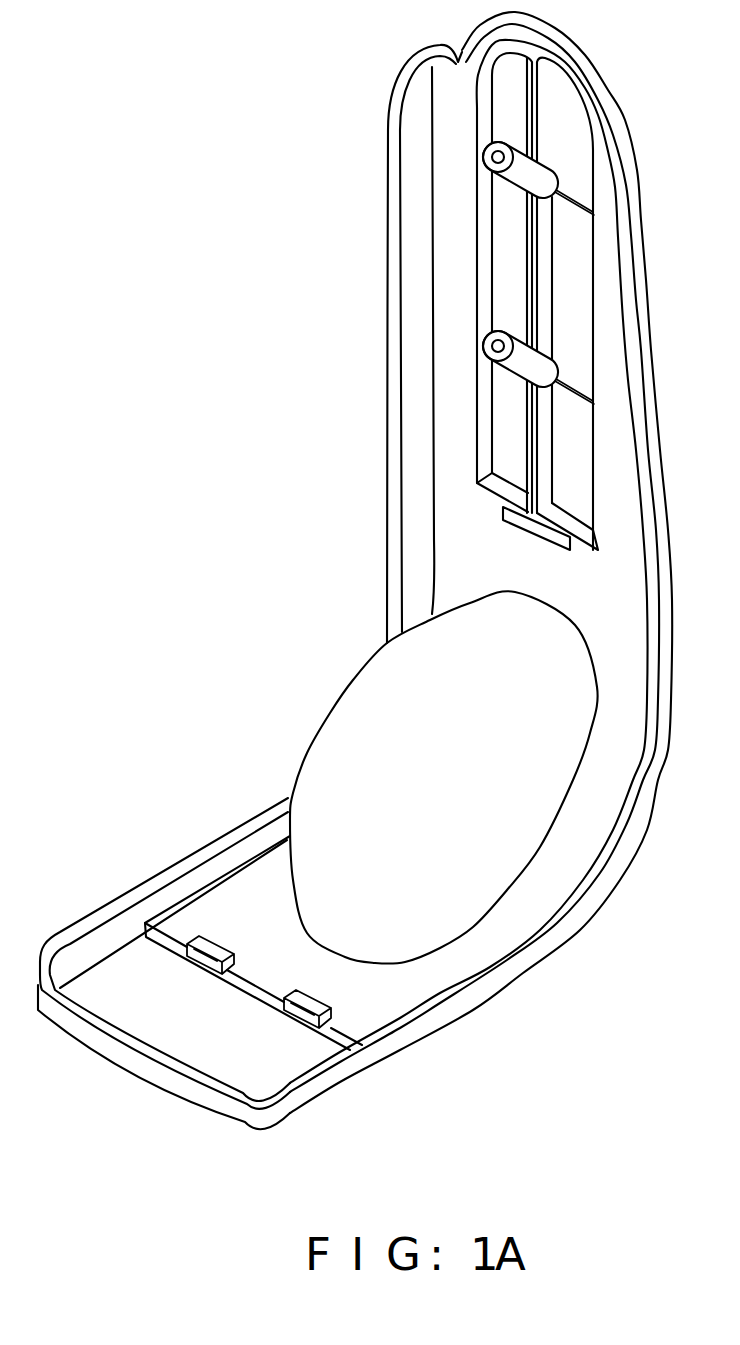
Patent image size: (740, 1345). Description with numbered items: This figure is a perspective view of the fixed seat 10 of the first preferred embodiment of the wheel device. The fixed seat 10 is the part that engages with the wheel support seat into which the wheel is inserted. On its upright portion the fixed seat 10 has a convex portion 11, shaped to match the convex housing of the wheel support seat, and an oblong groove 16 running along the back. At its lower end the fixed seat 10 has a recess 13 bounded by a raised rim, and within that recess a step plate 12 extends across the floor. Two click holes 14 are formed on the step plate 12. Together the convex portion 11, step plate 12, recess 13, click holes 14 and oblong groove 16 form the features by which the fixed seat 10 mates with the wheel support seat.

The fixed seat 10 is at (395, 272).
The convex portion 11 is at (340, 717).
The step plate 12 is at (210, 893).
The recess 13 is at (177, 1043).
The click holes 14 is at (197, 963).
The oblong groove 16 is at (522, 520).